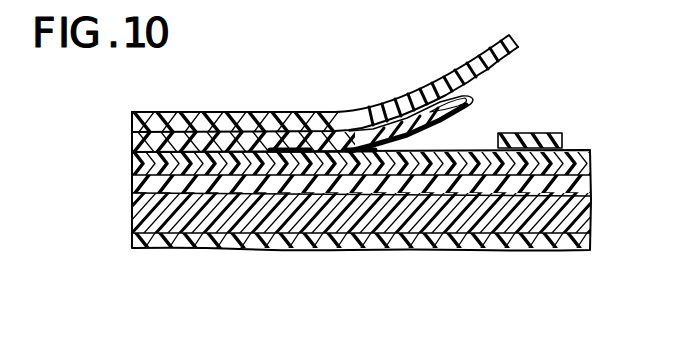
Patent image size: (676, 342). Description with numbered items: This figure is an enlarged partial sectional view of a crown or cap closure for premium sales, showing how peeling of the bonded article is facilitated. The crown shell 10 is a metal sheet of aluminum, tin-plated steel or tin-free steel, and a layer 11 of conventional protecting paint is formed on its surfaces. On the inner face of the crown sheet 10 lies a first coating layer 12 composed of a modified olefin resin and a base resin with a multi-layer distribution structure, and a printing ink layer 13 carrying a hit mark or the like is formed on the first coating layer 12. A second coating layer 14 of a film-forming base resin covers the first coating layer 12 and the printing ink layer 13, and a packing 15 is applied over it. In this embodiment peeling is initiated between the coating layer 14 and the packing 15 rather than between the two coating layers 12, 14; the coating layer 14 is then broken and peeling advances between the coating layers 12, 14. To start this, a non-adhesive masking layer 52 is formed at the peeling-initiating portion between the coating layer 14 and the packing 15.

The crown shell 10 is at (345, 233).
The layer of protecting paint 11 is at (131, 242).
The first coating layer 12 is at (128, 163).
The printing ink layer 13 is at (320, 111).
The second coating layer 14 is at (147, 138).
The packing 15 is at (221, 112).
The non-adhesive masking layer 52 is at (542, 133).